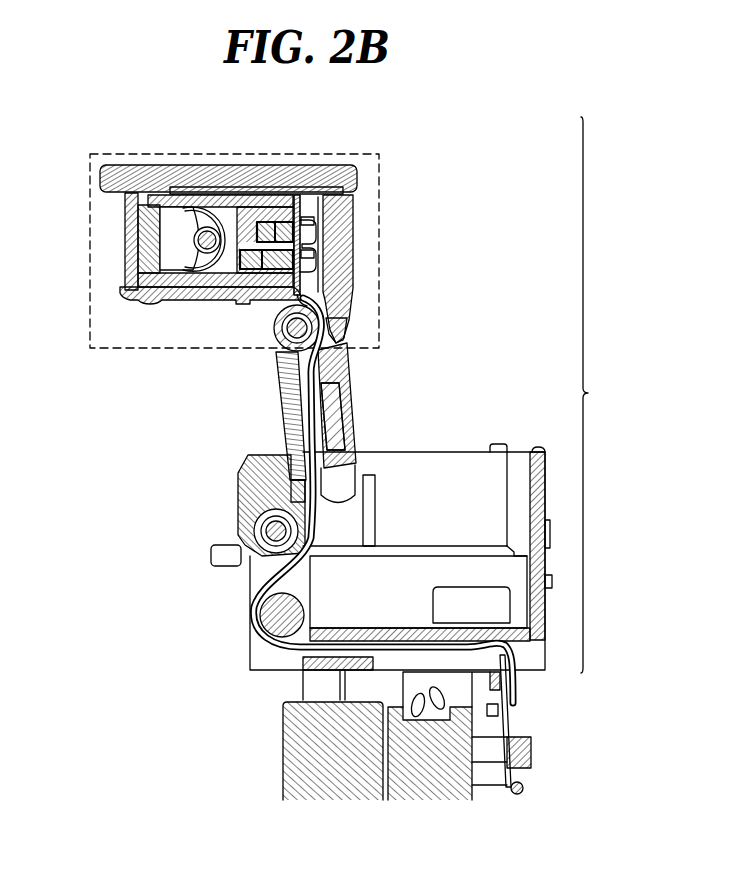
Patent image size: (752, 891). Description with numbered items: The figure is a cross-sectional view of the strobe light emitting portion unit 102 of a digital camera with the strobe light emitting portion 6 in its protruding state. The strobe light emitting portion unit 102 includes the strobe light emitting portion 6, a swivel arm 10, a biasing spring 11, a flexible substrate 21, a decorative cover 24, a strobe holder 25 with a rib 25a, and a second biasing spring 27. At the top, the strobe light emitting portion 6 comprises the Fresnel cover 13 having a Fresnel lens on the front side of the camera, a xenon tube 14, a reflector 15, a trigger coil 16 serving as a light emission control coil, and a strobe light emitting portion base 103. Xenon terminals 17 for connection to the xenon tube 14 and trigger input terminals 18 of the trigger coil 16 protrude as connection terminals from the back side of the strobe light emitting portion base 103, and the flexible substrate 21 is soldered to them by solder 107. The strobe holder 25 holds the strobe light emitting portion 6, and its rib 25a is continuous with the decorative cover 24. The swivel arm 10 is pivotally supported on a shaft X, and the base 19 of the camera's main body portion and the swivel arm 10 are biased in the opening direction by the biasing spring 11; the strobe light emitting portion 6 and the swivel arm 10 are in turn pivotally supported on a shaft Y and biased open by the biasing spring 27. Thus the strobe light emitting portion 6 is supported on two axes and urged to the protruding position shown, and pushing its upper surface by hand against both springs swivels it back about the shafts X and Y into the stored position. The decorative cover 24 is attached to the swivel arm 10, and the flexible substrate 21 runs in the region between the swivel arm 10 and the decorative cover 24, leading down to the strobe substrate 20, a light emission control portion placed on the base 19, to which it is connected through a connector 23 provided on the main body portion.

The strobe light emitting portion 6 is at (102, 146).
The Fresnel cover 13 is at (155, 222).
The strobe holder 25 is at (143, 293).
The xenon tube 14 is at (217, 228).
The reflector 15 is at (208, 230).
The strobe light emitting portion base 103 is at (270, 223).
The trigger coil 16 is at (296, 228).
The solder 107 is at (314, 221).
The trigger input terminals 18 is at (314, 240).
The xenon terminals 17 is at (323, 290).
The rib 25a is at (344, 336).
The biasing spring 27 is at (281, 337).
The shaft Y is at (284, 328).
The decorative cover 24 is at (350, 378).
The swivel arm 10 is at (284, 418).
The base 19 is at (240, 483).
The shaft X is at (270, 531).
The biasing spring 11 is at (274, 558).
The flexible substrate 21 is at (334, 548).
The strobe light emitting portion unit 102 is at (447, 458).
The connector 23 is at (518, 717).
The strobe substrate 20 is at (502, 790).